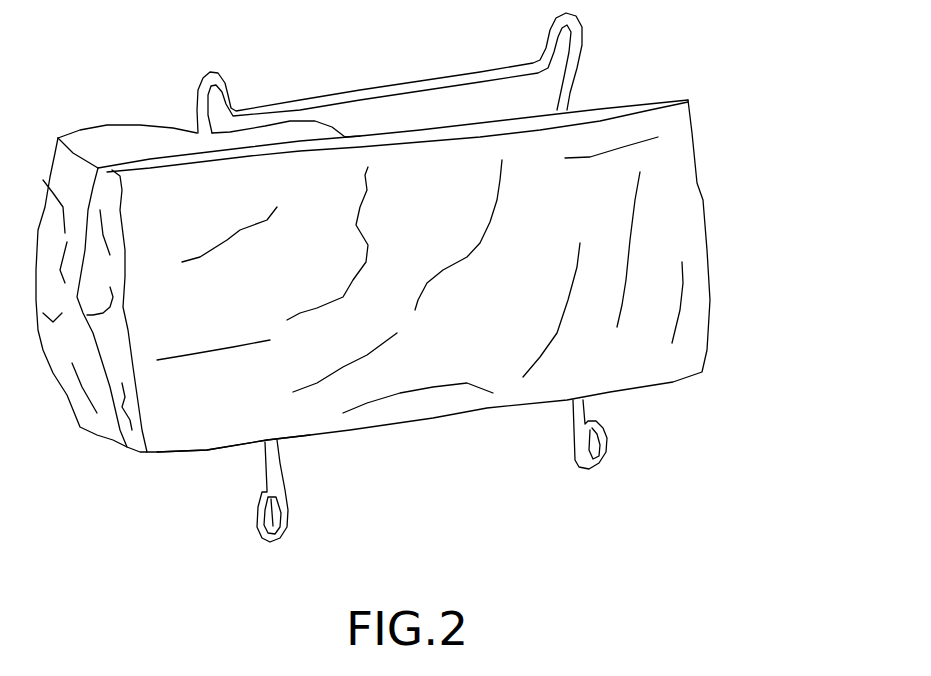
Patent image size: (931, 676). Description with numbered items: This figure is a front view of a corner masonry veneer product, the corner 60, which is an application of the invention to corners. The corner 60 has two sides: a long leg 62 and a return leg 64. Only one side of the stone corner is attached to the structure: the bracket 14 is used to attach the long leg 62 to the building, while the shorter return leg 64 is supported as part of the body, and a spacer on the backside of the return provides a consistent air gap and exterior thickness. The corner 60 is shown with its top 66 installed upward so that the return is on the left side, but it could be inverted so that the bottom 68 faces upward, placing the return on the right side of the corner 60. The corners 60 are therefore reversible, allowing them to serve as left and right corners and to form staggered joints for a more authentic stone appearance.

The bracket 14 is at (413, 73).
The corner 60 is at (413, 277).
The long leg 62 is at (432, 471).
The return leg 64 is at (373, 102).
The top 66 is at (84, 257).
The bottom 68 is at (233, 479).